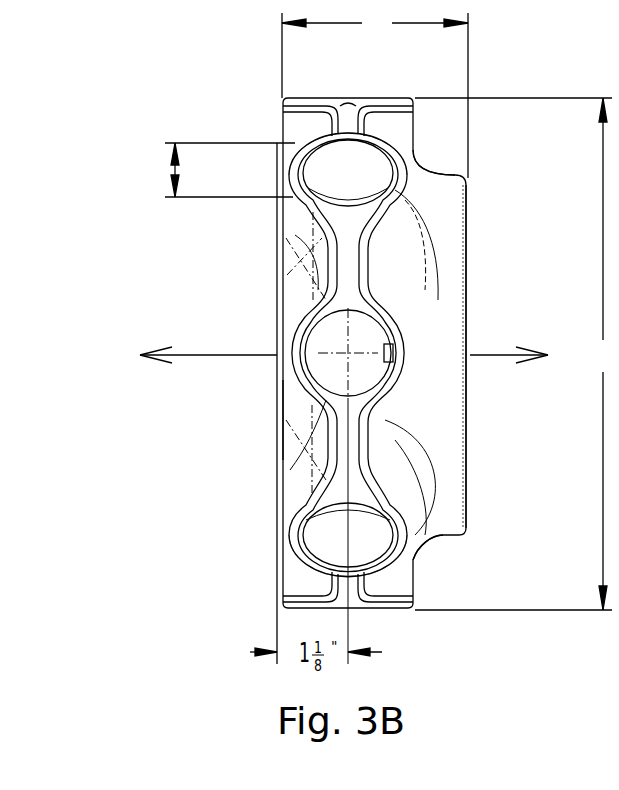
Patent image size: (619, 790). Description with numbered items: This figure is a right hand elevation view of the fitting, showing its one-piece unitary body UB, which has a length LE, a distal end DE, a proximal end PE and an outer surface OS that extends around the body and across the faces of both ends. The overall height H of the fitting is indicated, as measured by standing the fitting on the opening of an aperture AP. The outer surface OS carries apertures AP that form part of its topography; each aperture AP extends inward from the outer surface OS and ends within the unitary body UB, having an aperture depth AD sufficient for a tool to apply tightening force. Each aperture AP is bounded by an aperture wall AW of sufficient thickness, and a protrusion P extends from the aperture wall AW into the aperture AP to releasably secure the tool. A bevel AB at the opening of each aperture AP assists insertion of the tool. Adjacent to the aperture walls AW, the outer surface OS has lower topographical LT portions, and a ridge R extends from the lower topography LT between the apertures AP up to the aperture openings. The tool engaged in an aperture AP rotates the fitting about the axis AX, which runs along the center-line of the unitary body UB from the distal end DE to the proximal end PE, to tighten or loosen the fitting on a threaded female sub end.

The length LE is at (375, 93).
The ridge R is at (347, 103).
The protrusion P is at (391, 150).
The aperture wall AW is at (426, 176).
The aperture depth AD is at (174, 170).
The bevel AB is at (300, 150).
The unitary body UB is at (238, 243).
The lower topographical portion LT is at (305, 277).
The proximal end PE is at (470, 290).
The axis AX is at (358, 356).
The height H is at (513, 354).
The distal end DE is at (282, 420).
The aperture AP is at (336, 380).
The outer surface OS is at (443, 537).